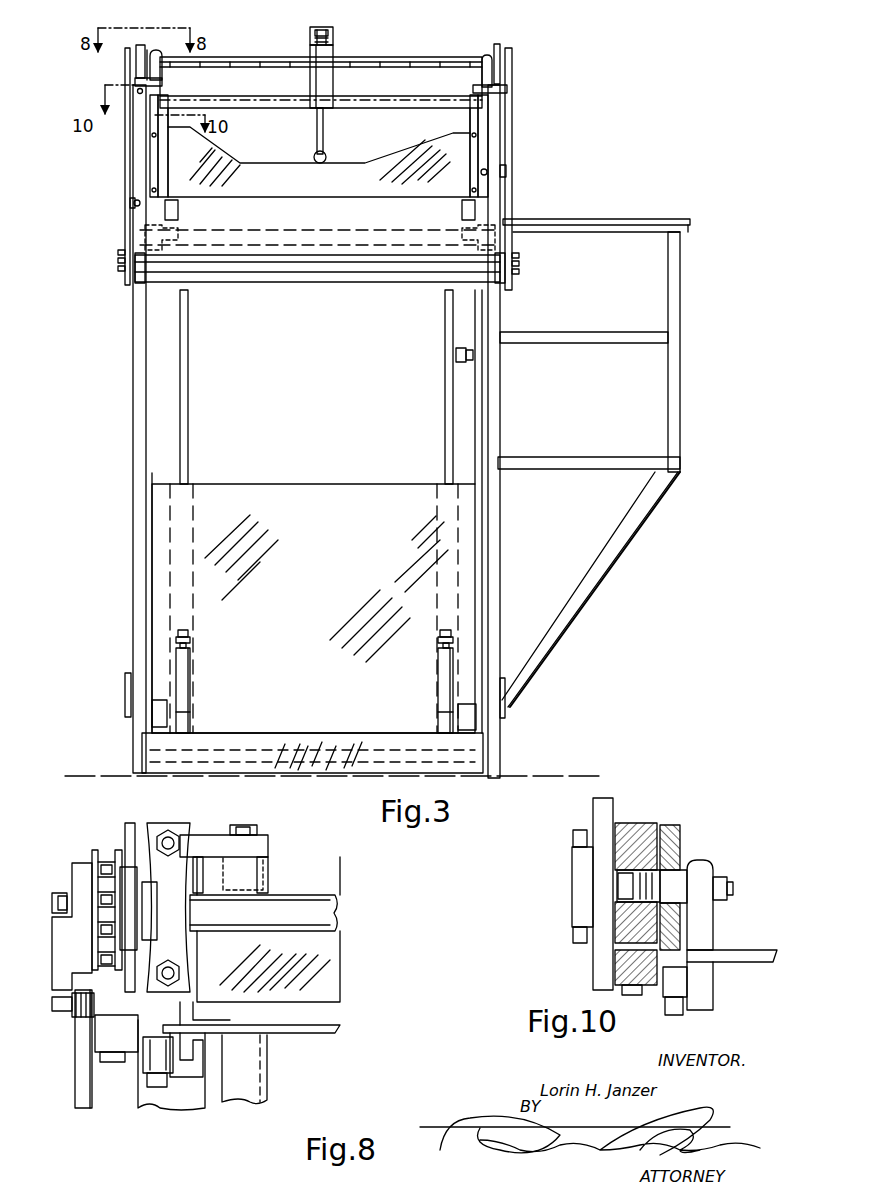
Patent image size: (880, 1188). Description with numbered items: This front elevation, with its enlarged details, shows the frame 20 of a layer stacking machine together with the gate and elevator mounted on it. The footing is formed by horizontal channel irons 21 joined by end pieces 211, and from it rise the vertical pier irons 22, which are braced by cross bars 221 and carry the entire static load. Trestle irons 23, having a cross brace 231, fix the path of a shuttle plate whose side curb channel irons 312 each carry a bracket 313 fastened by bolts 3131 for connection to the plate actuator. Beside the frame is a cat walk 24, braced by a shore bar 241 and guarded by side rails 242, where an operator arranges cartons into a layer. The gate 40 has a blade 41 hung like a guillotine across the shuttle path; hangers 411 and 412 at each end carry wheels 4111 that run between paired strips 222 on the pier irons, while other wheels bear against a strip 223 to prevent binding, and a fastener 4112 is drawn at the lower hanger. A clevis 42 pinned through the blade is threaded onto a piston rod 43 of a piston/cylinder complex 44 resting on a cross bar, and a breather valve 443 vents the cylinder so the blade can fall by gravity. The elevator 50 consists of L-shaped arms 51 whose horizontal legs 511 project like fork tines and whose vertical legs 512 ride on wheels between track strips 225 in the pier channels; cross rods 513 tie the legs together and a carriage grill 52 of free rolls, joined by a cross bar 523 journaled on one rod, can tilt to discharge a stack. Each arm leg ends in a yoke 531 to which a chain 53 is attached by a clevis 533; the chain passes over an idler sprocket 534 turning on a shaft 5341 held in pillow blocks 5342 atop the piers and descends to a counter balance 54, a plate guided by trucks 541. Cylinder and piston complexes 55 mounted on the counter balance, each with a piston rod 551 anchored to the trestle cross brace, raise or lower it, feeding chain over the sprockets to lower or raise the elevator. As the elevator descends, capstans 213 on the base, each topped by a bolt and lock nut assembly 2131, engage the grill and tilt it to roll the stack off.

In FIG. 3, the frame 20 is at (130, 343).
In FIG. 3, the channel irons 21 is at (140, 741).
In FIG. 3, the end pieces 211 is at (302, 746).
In FIG. 3, the capstans 213 is at (180, 688).
In FIG. 3, the threaded bolt and lock nut assembly 2131 is at (192, 633).
In FIG. 3, the pier irons 22 is at (140, 392).
In FIG. 10, the pier irons 22 is at (635, 823).
In FIG. 3, the cross bars 221 is at (380, 108).
In FIG. 8, the cross bars 221 is at (320, 962).
In FIG. 10, the strips 222 is at (672, 850).
In FIG. 8, the strip 223 is at (118, 1040).
In FIG. 10, the strip 223 is at (632, 968).
In FIG. 8, the track strips 225 is at (115, 994).
In FIG. 10, the track strips 225 is at (632, 862).
In FIG. 8, the trestle irons 23 is at (178, 1088).
In FIG. 3, the cross brace 231 is at (143, 238).
In FIG. 3, the cat walk 24 is at (645, 220).
In FIG. 3, the shore bar 241 is at (606, 566).
In FIG. 3, the side rails 242 is at (682, 388).
In FIG. 3, the channel irons 312 is at (180, 211).
In FIG. 8, the channel irons 312 is at (242, 1076).
In FIG. 8, the bracket 313 is at (256, 845).
In FIG. 8, the bolts 3131 is at (258, 830).
In FIG. 3, the gate 40 is at (272, 160).
In FIG. 8, the gate 40 is at (318, 1036).
In FIG. 3, the blade 41 is at (370, 182).
In FIG. 8, the blade 41 is at (325, 1035).
In FIG. 10, the blade 41 is at (762, 958).
In FIG. 8, the hanger 411 is at (190, 1020).
In FIG. 10, the hanger 411 is at (706, 936).
In FIG. 10, the wheels 4111 is at (674, 888).
In FIG. 8, the bracket bolt 4112 is at (160, 1048).
In FIG. 10, the bracket bolt 4112 is at (690, 992).
In FIG. 3, the hanger 412 is at (155, 153).
In FIG. 8, the hanger 412 is at (190, 1040).
In FIG. 10, the hanger 412 is at (714, 970).
In FIG. 3, the clevis 42 is at (327, 159).
In FIG. 3, the piston rod 43 is at (323, 143).
In FIG. 3, the piston/cylinder complex 44 is at (322, 85).
In FIG. 3, the breather valve 443 is at (333, 44).
In FIG. 3, the elevator 50 is at (123, 161).
In FIG. 8, the elevator 50 is at (70, 1036).
In FIG. 10, the elevator 50 is at (590, 958).
In FIG. 3, the L-shaped arms 51 is at (128, 176).
In FIG. 8, the L-shaped arms 51 is at (80, 1055).
In FIG. 3, the leg 511 is at (118, 259).
In FIG. 8, the leg 511 is at (85, 1083).
In FIG. 3, the leg 512 is at (132, 206).
In FIG. 3, the cross rods 513 is at (256, 273).
In FIG. 3, the carriage or grill 52 is at (258, 240).
In FIG. 3, the cross bar 523 is at (160, 262).
In FIG. 3, the chains 53 is at (135, 82).
In FIG. 8, the chains 53 is at (56, 898).
In FIG. 10, the chains 53 is at (625, 884).
In FIG. 8, the yoke 531 is at (85, 958).
In FIG. 10, the yoke 531 is at (600, 866).
In FIG. 10, the clevis 533 is at (627, 891).
In FIG. 3, the idler sprocket 534 is at (150, 67).
In FIG. 8, the idler sprocket 534 is at (100, 896).
In FIG. 3, the shaft 5341 is at (440, 56).
In FIG. 8, the shaft 5341 is at (292, 908).
In FIG. 3, the pillow blocks 5342 is at (154, 56).
In FIG. 8, the pillow blocks 5342 is at (170, 870).
In FIG. 3, the counter balance 54 is at (314, 525).
In FIG. 3, the trucks 541 is at (160, 712).
In FIG. 3, the cylinder and piston complexes 55 is at (196, 506).
In FIG. 3, the piston rod 551 is at (190, 368).